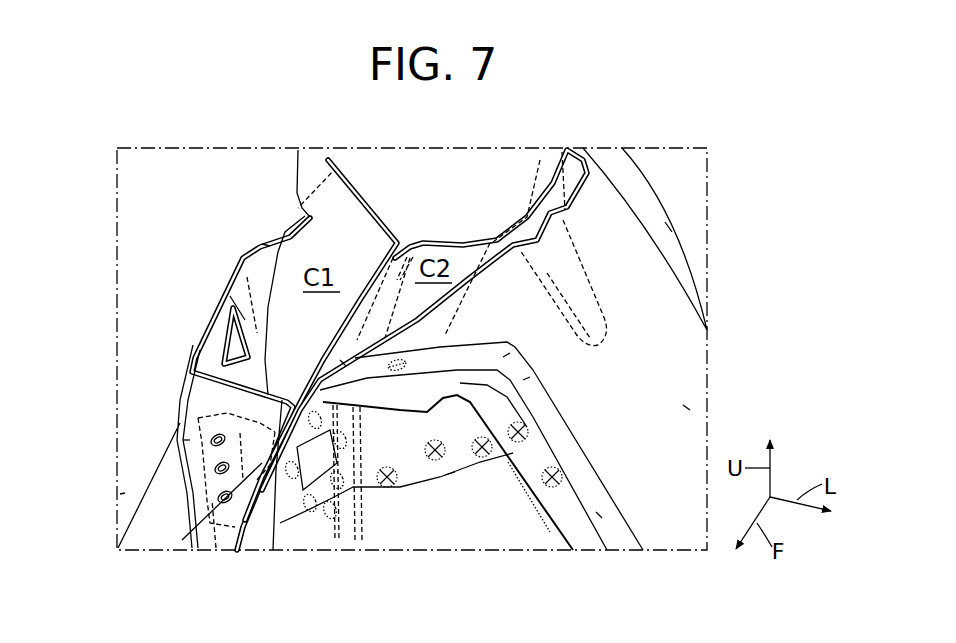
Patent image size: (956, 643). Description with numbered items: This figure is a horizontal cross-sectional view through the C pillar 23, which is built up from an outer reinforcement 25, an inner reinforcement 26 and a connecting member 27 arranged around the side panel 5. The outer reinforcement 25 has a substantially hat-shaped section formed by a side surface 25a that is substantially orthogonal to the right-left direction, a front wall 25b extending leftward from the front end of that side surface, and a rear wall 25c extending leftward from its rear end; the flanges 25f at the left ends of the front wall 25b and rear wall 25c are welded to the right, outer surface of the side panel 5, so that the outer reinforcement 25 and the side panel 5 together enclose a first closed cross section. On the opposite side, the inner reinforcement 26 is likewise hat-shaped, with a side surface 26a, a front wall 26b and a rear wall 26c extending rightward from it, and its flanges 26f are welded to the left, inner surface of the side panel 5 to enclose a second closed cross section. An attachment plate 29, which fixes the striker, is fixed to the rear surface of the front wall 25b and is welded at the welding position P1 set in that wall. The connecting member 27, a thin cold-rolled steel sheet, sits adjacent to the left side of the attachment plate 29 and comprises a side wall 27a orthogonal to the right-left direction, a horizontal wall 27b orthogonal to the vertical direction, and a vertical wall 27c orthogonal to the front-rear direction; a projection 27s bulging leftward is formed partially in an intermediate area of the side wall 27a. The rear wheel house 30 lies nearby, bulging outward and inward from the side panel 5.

The side panel 5 is at (367, 280).
The C pillar 23 is at (226, 226).
The outer reinforcement 25 is at (190, 342).
The side surface 25a is at (227, 293).
The front wall 25b is at (190, 440).
The rear wall 25c is at (268, 240).
The flanges 25f is at (298, 150).
The inner reinforcement 26 is at (681, 363).
The side surface 26a is at (685, 407).
The front wall 26b is at (600, 512).
The rear wall 26c is at (583, 151).
The flanges 26f is at (668, 226).
The connecting member 27 is at (404, 494).
The side wall 27a is at (308, 540).
The horizontal wall 27b is at (450, 477).
The vertical wall 27c is at (343, 363).
The projection 27s is at (285, 520).
The attachment plate 29 is at (216, 548).
The rear wheel house 30 is at (125, 493).
The welding position P1 is at (182, 540).